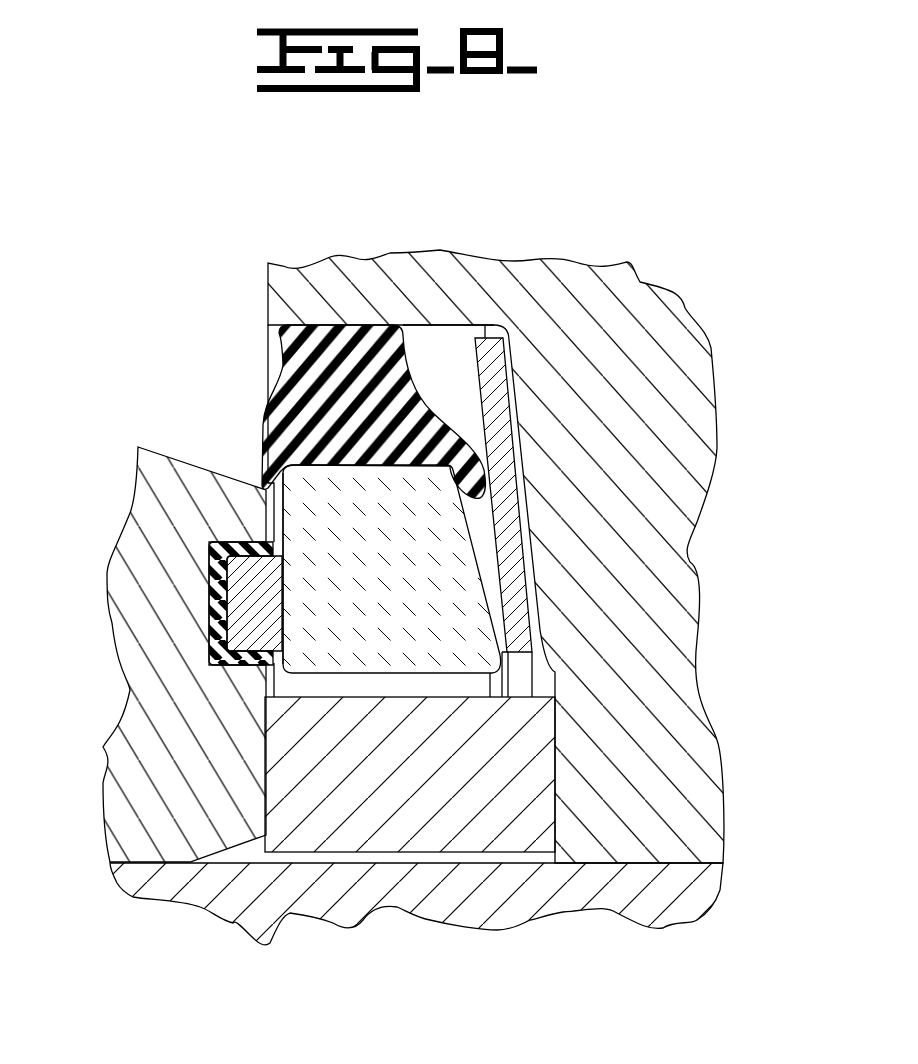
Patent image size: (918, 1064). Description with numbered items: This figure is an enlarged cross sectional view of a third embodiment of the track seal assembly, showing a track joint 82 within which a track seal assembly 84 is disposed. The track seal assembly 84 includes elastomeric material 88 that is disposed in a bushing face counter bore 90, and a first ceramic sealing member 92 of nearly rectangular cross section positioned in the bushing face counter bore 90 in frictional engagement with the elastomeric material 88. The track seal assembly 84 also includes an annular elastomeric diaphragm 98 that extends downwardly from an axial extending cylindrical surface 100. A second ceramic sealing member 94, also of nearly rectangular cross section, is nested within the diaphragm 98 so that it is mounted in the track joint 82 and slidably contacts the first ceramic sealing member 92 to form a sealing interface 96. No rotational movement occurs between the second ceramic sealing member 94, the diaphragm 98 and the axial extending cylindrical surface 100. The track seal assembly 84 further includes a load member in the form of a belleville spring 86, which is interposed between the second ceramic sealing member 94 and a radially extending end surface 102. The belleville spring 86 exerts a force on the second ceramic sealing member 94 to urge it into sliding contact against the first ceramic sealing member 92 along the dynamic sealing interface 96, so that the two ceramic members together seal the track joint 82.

The track joint 82 is at (240, 455).
The track seal assembly 84 is at (432, 358).
The belleville spring 86 is at (490, 358).
The elastomeric material 88 is at (212, 612).
The bushing face counter bore 90 is at (207, 548).
The first ceramic sealing member 92 is at (245, 628).
The second ceramic sealing member 94 is at (390, 648).
The sealing interface 96 is at (285, 598).
The annular elastomeric diaphragm 98 is at (290, 358).
The axial extending cylindrical surface 100 is at (422, 334).
The radially extending end surface 102 is at (546, 650).